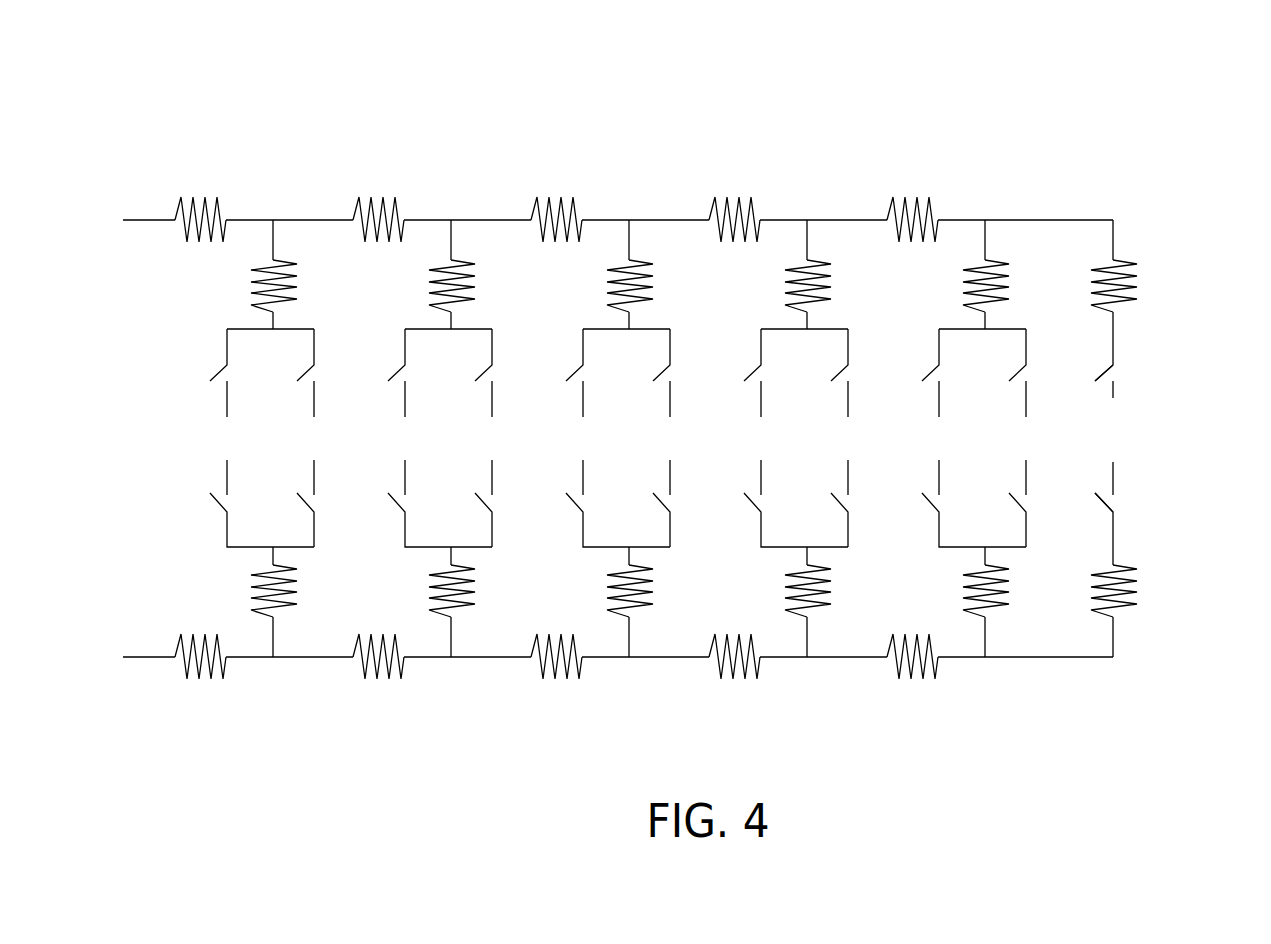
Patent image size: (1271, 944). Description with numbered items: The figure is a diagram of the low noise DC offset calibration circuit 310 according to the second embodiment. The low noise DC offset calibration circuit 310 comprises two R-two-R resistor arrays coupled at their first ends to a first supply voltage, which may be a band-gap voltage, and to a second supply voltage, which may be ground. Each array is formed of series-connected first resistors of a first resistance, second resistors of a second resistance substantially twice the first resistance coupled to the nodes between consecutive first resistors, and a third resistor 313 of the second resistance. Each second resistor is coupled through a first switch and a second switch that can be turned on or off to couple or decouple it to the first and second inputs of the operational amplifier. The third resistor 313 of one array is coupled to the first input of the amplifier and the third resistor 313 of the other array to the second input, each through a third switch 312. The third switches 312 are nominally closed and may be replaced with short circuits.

The low noise DC offset calibration circuit 310 is at (667, 390).
The third switch 312 is at (1115, 373).
The third resistor 313 is at (1123, 262).